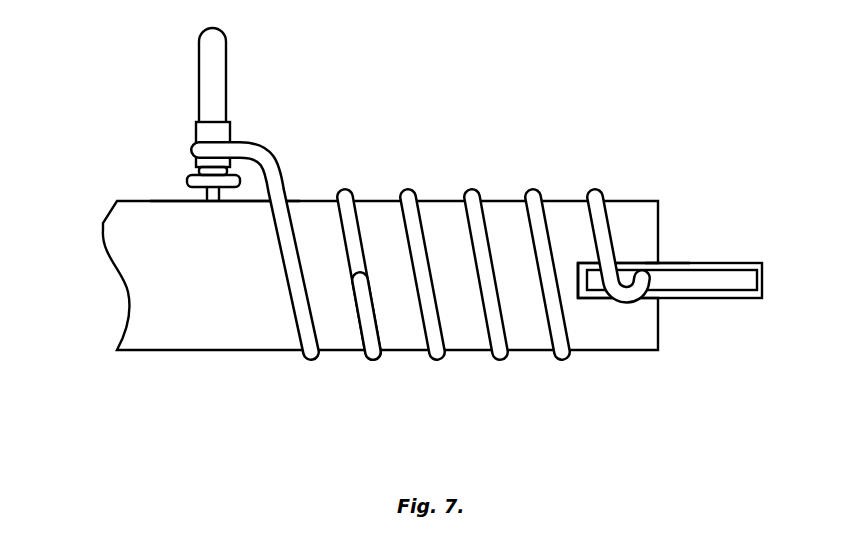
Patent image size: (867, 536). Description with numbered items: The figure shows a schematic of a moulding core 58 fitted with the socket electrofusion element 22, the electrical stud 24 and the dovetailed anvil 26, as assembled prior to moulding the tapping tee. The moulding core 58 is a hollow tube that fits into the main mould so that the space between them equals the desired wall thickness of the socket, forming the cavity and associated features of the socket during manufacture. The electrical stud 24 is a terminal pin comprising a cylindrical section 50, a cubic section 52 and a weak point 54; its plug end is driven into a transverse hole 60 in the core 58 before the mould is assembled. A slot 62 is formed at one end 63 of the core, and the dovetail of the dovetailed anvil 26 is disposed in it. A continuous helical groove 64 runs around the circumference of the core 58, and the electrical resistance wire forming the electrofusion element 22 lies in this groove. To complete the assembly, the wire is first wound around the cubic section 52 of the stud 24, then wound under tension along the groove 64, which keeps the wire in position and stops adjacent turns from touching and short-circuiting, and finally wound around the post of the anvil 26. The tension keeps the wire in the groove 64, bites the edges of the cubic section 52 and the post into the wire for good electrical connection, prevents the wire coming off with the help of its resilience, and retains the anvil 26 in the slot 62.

The socket electrofusion element 22 is at (345, 196).
The electrical stud 24 is at (244, 90).
The dovetailed anvil 26 is at (738, 260).
The cylindrical section 50 is at (223, 50).
The cubic section 52 is at (197, 168).
The weak point 54 is at (210, 190).
The moulding core 58 is at (220, 312).
The transverse hole 60 is at (206, 202).
The slot 62 is at (655, 267).
The end 63 is at (658, 201).
The helical groove 64 is at (364, 358).